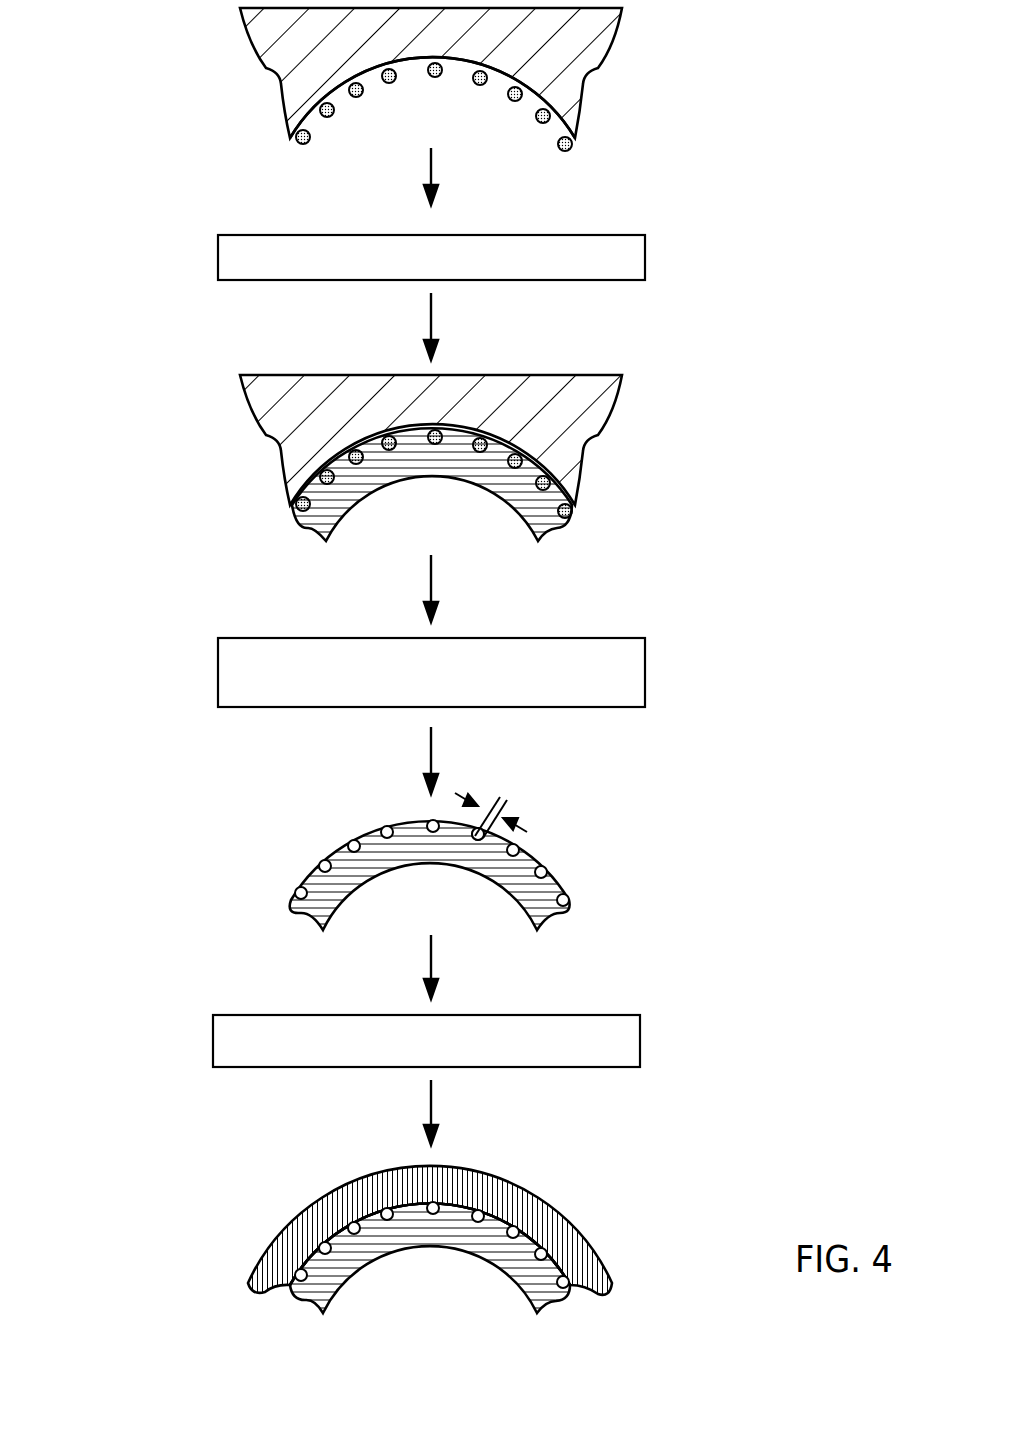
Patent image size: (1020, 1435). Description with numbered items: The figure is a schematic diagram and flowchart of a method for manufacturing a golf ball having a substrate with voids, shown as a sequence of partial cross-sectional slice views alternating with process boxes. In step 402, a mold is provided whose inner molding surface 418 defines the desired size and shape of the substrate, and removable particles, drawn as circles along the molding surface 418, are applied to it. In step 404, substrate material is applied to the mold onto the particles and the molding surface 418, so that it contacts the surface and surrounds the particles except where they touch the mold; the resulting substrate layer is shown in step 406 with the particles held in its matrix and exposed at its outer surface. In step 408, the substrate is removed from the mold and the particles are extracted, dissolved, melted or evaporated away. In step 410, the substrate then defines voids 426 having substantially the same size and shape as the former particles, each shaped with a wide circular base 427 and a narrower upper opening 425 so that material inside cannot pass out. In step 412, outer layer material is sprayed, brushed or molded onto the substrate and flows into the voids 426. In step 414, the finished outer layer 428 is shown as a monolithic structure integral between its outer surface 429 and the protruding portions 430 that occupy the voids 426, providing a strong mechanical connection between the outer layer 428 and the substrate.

The step of providing mold and applying particles 402 is at (134, 82).
The step of applying substrate material 404 is at (134, 265).
The substrate applied in mold step 406 is at (134, 430).
The step of removing substrate from mold and removing particles 408 is at (134, 652).
The step showing substrate defining voids 410 is at (134, 857).
The step of applying outer layer material 412 is at (134, 1036).
The step showing outer layer formed over substrate 414 is at (134, 1222).
The inner molding surface 418 is at (497, 84).
The narrower upper opening 425 is at (512, 830).
The voids 426 is at (540, 870).
The wide circular base 427 is at (472, 840).
The outer layer 428 is at (540, 1212).
The outer surface 429 is at (313, 1202).
The protruding portions 430 is at (303, 1281).